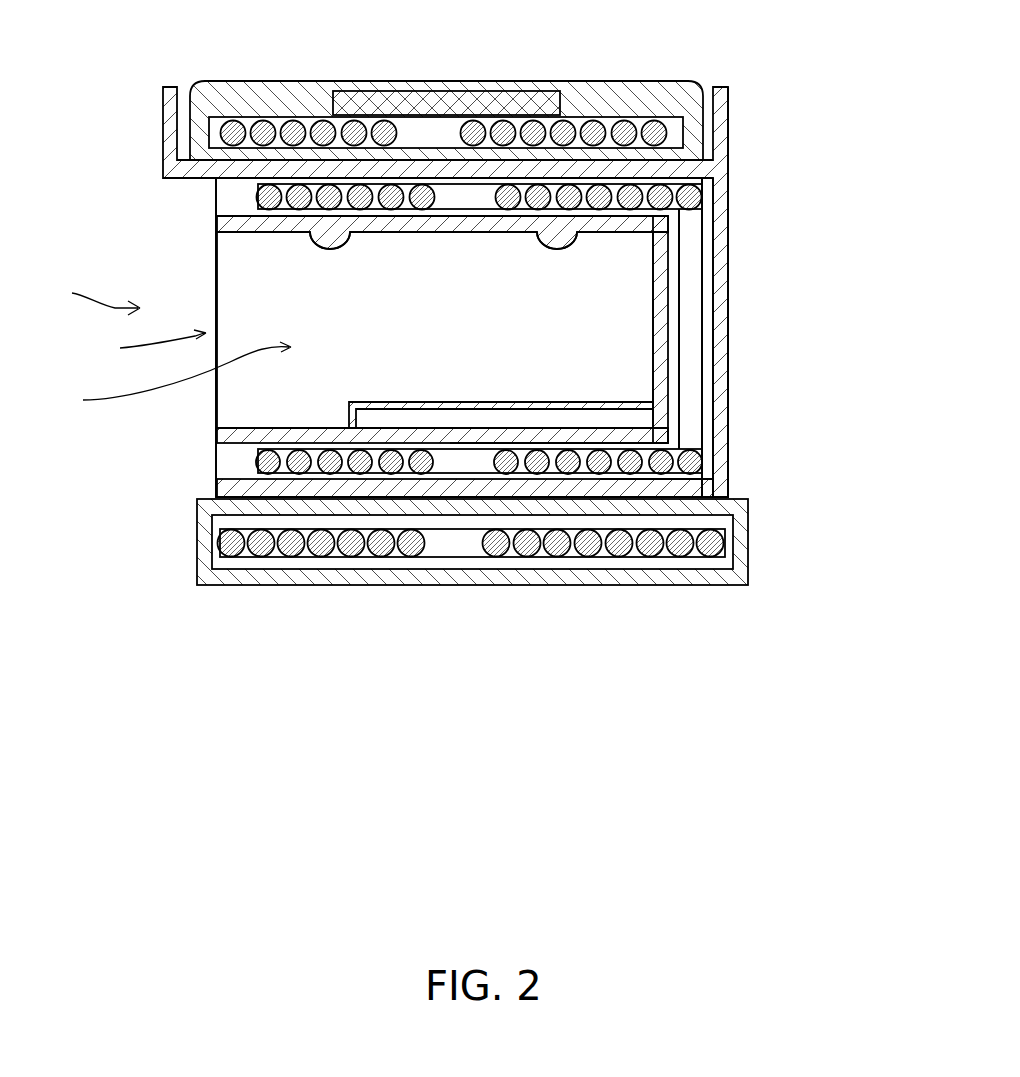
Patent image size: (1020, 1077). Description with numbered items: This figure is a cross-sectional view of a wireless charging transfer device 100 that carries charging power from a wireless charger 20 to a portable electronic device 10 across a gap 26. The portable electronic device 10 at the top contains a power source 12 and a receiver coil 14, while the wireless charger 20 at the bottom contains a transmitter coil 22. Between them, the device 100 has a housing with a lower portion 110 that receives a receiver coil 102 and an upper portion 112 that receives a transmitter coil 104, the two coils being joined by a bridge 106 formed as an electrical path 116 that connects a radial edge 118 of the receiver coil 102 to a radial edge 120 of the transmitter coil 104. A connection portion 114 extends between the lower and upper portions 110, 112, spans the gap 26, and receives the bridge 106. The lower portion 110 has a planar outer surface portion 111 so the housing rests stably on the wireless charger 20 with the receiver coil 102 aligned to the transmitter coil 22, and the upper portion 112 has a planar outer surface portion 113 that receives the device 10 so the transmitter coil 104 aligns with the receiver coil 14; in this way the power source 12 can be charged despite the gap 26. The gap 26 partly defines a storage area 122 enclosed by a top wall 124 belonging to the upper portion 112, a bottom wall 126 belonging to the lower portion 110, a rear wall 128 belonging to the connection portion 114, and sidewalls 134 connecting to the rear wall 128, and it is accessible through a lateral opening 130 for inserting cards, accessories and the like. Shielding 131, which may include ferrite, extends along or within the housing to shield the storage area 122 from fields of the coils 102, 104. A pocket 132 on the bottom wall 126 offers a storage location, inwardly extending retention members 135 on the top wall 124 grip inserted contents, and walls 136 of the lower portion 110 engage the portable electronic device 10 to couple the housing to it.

The wireless charging transfer device 100 is at (770, 52).
The portable electronic device 10 is at (212, 81).
The power source 12 is at (347, 81).
The receiver coil 14 is at (492, 122).
The wireless charger 20 is at (197, 540).
The transmitter coil 22 is at (512, 557).
The gap 26 is at (85, 297).
The receiver coil 102 is at (258, 463).
The transmitter coil 104 is at (258, 198).
The bridge 106 is at (704, 251).
The lower portion 110 is at (730, 443).
The planar outer surface portion 111 is at (693, 497).
The upper portion 112 is at (729, 207).
The planar outer surface portion 113 is at (699, 161).
The connection portion 114 is at (722, 347).
The electrical path 116 is at (704, 319).
The radial edge 118 is at (698, 472).
The radial edge 120 is at (698, 190).
The storage area 122 is at (160, 380).
The top wall 124 is at (260, 427).
The bottom wall 126 is at (259, 233).
The rear wall 128 is at (658, 323).
The opening 130 is at (135, 345).
The shielding 131 is at (613, 437).
The pocket 132 is at (410, 402).
The sidewall 134 is at (268, 287).
The retention member 135 is at (327, 250).
The wall 136 is at (722, 108).